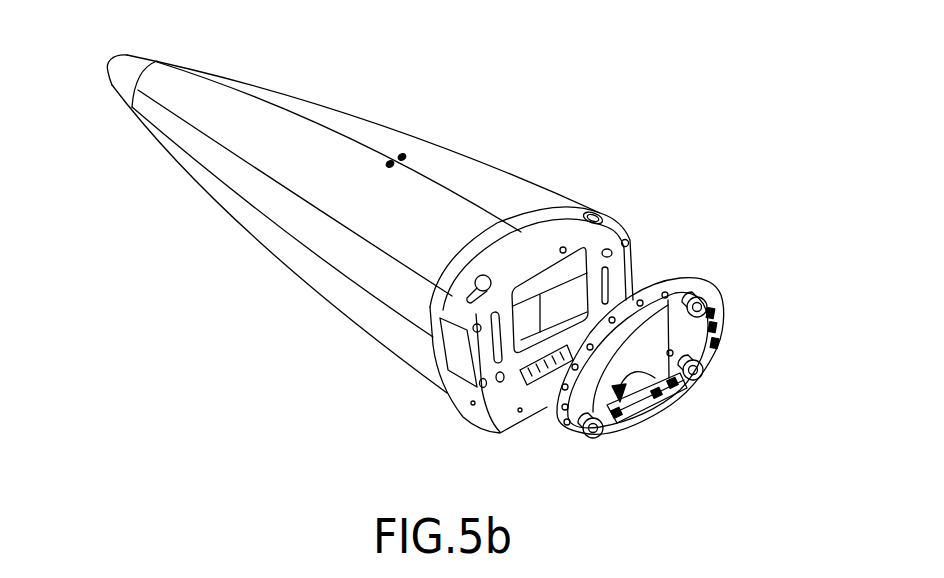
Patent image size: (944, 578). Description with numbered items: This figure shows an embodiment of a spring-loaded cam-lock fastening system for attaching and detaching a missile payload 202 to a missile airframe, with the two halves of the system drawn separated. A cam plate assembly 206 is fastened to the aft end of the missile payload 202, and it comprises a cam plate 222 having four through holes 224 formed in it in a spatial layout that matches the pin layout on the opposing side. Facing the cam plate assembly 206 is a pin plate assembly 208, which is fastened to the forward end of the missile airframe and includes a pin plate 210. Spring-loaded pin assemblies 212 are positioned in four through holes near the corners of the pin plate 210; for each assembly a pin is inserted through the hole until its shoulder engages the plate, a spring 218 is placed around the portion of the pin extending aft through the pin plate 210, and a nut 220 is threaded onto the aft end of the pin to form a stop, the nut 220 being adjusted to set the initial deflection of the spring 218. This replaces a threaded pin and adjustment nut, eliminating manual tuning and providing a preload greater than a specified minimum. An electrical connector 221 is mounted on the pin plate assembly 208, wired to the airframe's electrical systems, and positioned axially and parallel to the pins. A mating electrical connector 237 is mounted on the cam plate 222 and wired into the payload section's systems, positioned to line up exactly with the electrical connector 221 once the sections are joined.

The missile payload 202 is at (353, 117).
The cam plate assembly 206 is at (614, 180).
The pin plate assembly 208 is at (708, 262).
The pin plate 210 is at (703, 290).
The spring-loaded pin assemblies 212 is at (595, 458).
The spring 218 is at (707, 356).
The nut 220 is at (704, 368).
The electrical connector 221 is at (665, 403).
The cam plate 222 is at (630, 236).
The through holes 224 is at (487, 332).
The mating electrical connector 237 is at (535, 393).